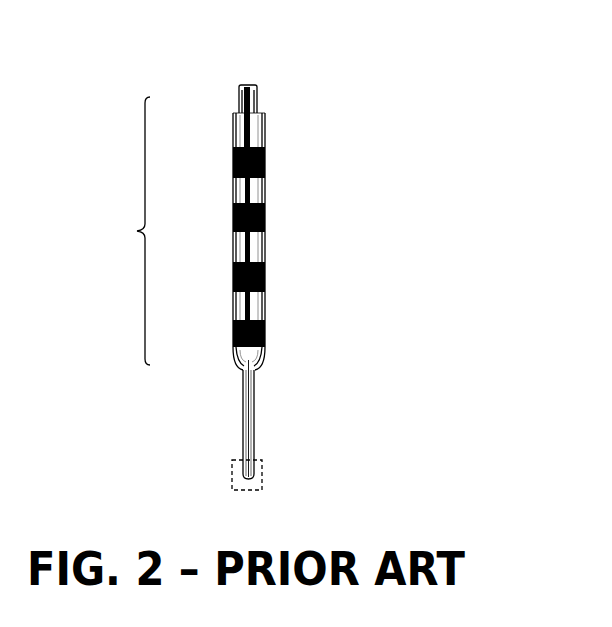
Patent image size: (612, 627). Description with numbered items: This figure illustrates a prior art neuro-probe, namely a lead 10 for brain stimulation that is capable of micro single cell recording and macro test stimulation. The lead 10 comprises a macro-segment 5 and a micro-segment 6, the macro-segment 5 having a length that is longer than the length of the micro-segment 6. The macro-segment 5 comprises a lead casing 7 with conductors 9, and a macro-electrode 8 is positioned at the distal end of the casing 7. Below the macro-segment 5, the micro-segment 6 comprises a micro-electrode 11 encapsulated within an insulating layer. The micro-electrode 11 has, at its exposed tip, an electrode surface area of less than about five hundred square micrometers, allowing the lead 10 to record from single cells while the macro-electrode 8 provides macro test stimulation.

The macro-segment 5 is at (131, 231).
The micro-segment 6 is at (376, 478).
The lead casing 7 is at (233, 256).
The macro-electrode 8 is at (262, 330).
The conductors 9 is at (262, 170).
The lead 10 is at (218, 92).
The micro-electrode 11 is at (262, 474).